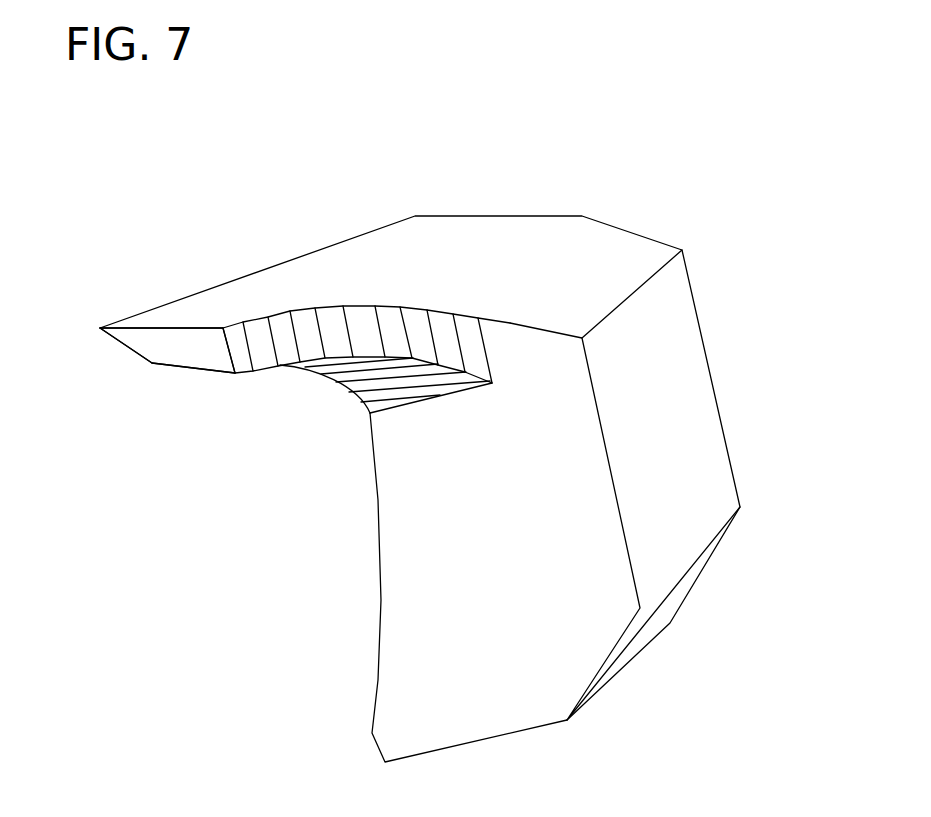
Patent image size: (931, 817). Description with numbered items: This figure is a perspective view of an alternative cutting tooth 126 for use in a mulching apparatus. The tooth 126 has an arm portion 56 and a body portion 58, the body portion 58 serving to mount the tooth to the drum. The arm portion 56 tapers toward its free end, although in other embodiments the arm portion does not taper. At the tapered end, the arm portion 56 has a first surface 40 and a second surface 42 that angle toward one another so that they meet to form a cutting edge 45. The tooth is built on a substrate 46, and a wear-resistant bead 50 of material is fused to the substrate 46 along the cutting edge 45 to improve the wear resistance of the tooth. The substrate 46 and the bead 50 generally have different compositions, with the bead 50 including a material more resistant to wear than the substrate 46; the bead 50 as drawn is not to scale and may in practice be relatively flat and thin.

The cutting tooth 126 is at (398, 443).
The arm portion 56 is at (263, 293).
The body portion 58 is at (670, 317).
The first surface 40 is at (157, 327).
The cutting edge 45 is at (127, 313).
The bead 50 is at (123, 347).
The second surface 42 is at (135, 350).
The substrate 46 is at (193, 353).